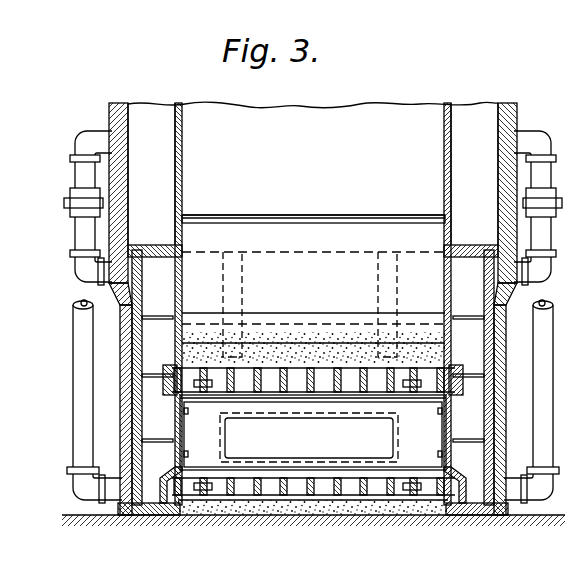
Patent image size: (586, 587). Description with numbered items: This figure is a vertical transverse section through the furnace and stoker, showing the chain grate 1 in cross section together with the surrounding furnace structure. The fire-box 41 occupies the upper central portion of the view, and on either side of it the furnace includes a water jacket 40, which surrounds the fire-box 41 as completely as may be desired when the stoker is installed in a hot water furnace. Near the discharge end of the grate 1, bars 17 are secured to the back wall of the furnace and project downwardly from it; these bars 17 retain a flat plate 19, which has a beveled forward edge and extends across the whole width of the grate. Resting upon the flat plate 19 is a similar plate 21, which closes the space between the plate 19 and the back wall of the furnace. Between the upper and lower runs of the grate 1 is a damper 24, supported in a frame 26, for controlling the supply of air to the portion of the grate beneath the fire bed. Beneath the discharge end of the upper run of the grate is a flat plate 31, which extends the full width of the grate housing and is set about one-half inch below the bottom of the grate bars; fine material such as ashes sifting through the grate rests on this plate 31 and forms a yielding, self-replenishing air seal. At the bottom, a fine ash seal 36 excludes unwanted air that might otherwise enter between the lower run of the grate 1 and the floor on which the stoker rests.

The chain grate 1 is at (313, 380).
The bars 17 is at (402, 293).
The flat plate 19 is at (313, 337).
The plate 21 is at (313, 232).
The damper 24 is at (309, 437).
The frame 26 is at (313, 432).
The flat plate 31 is at (406, 398).
The fine ash seal 36 is at (326, 512).
The water jacket 40 is at (313, 174).
The fire-box 41 is at (313, 158).